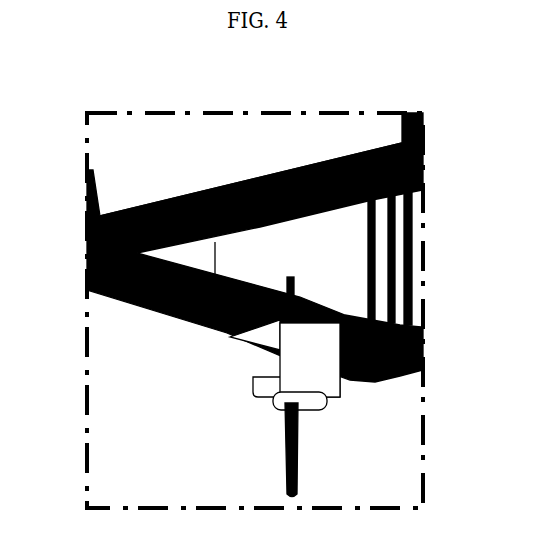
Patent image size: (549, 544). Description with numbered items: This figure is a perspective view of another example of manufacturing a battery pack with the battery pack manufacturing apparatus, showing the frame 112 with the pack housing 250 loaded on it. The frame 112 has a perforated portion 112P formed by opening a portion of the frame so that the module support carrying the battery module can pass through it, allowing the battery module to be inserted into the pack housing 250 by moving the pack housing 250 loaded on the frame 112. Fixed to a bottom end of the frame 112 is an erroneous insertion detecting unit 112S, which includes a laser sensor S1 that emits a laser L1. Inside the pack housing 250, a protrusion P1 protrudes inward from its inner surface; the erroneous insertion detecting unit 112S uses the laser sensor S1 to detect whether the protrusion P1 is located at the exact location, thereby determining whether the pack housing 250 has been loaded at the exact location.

The pack housing 250 is at (327, 142).
The frame 112 is at (133, 208).
The perforated portion 112P is at (320, 228).
The erroneous insertion detecting unit 112S is at (244, 409).
The protrusion P1 is at (300, 263).
The laser L1 is at (293, 297).
The laser sensor S1 is at (325, 398).